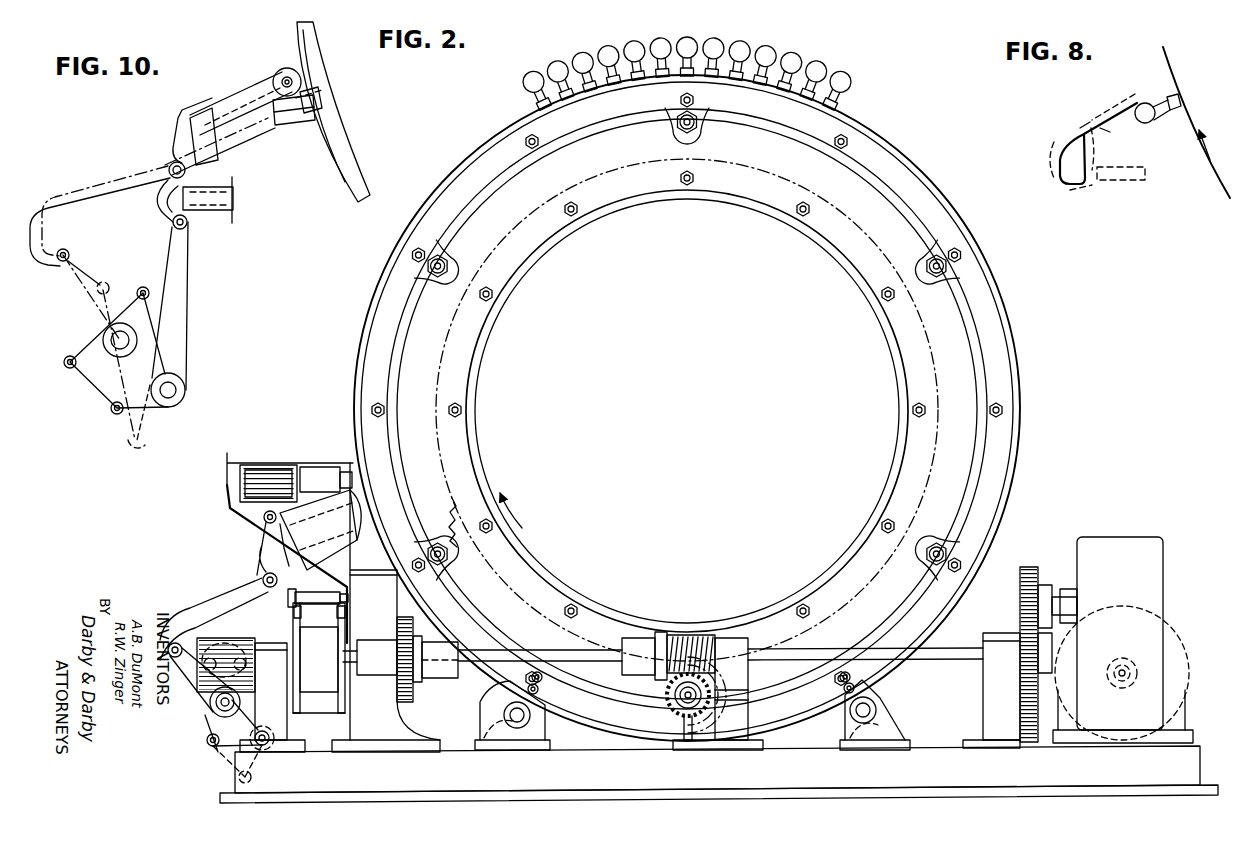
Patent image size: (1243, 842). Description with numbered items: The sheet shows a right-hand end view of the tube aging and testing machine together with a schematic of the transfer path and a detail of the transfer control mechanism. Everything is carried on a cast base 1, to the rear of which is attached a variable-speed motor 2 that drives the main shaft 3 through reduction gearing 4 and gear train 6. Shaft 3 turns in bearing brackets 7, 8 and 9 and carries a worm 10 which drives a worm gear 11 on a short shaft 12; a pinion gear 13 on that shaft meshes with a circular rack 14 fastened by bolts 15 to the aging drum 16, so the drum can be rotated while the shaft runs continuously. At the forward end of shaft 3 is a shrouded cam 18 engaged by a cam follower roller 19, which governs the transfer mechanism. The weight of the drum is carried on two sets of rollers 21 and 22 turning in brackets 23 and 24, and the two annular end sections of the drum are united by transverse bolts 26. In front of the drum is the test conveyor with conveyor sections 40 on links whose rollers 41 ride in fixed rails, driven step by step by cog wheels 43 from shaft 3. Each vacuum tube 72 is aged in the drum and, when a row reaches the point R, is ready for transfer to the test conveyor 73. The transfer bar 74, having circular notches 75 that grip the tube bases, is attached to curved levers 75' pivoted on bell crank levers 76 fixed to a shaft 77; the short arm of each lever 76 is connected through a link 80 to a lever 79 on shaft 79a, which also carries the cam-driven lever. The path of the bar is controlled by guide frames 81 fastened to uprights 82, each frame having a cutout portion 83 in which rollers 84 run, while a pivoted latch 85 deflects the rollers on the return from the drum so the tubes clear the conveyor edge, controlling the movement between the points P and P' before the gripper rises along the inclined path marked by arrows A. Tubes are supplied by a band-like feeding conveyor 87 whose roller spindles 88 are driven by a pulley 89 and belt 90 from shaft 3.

In FIG. 2, the base 1 is at (1198, 772).
In FIG. 2, the motor 2 is at (1172, 652).
In FIG. 2, the main shaft 3 is at (951, 662).
In FIG. 2, the reduction gearing 4 is at (1162, 602).
In FIG. 2, the gear train 6 is at (1020, 601).
In FIG. 10, the gear train 6 is at (338, 172).
In FIG. 2, the bearing bracket 7 is at (983, 716).
In FIG. 2, the bearing bracket 8 is at (736, 742).
In FIG. 2, the bearing bracket 9 is at (740, 640).
In FIG. 2, the worm 10 is at (706, 636).
In FIG. 2, the worm gear 11 is at (686, 722).
In FIG. 2, the short shaft 12 is at (668, 702).
In FIG. 2, the pinion gear 13 is at (650, 678).
In FIG. 2, the circular rack 14 is at (607, 630).
In FIG. 2, the bolts 15 is at (574, 610).
In FIG. 2, the aging drum 16 is at (1012, 511).
In FIG. 8, the aging drum 16 is at (1212, 170).
In FIG. 2, the shrouded cam 18 is at (254, 646).
In FIG. 2, the cam follower roller 19 is at (200, 672).
In FIG. 2, the rollers 21 is at (880, 706).
In FIG. 2, the rollers 22 is at (500, 703).
In FIG. 2, the bracket 23 is at (893, 737).
In FIG. 2, the bracket 24 is at (492, 728).
In FIG. 2, the transverse bolts 26 is at (952, 562).
In FIG. 2, the conveyor sections 40 is at (319, 658).
In FIG. 2, the rollers 41 is at (346, 612).
In FIG. 2, the cog wheels 43 is at (320, 714).
In FIG. 2, the vacuum tube 72 is at (772, 52).
In FIG. 10, the vacuum tube 72 is at (285, 130).
In FIG. 8, the test conveyor 73 is at (1108, 181).
In FIG. 2, the transfer bar 74 is at (310, 553).
In FIG. 10, the transfer bar 74 is at (320, 100).
In FIG. 2, the circular notches 75 is at (214, 614).
In FIG. 10, the curved levers 75' is at (152, 192).
In FIG. 2, the bell crank levers 76 is at (180, 668).
In FIG. 10, the bell crank levers 76 is at (183, 304).
In FIG. 10, the shaft 77 is at (185, 385).
In FIG. 2, the lever 79 is at (211, 722).
In FIG. 10, the lever 79 is at (92, 352).
In FIG. 10, the shaft 79a is at (132, 344).
In FIG. 2, the link 80 is at (226, 754).
In FIG. 10, the link 80 is at (88, 382).
In FIG. 2, the guide frames 81 is at (262, 546).
In FIG. 10, the guide frames 81 is at (174, 136).
In FIG. 2, the uprights 82 is at (368, 742).
In FIG. 10, the cutout portion 83 is at (236, 97).
In FIG. 10, the rollers 84 is at (283, 74).
In FIG. 2, the latch 85 is at (265, 576).
In FIG. 10, the latch 85 is at (167, 170).
In FIG. 2, the feeding conveyor 87 is at (276, 452).
In FIG. 2, the spindles 88 is at (324, 482).
In FIG. 2, the pulley 89 is at (362, 640).
In FIG. 2, the belt 90 is at (372, 586).
In FIG. 2, the point R is at (380, 498).
In FIG. 8, the point R is at (1187, 106).
In FIG. 8, the point P is at (1085, 147).
In FIG. 8, the point P' is at (1070, 121).
In FIG. 8, the arrows a A is at (1112, 128).